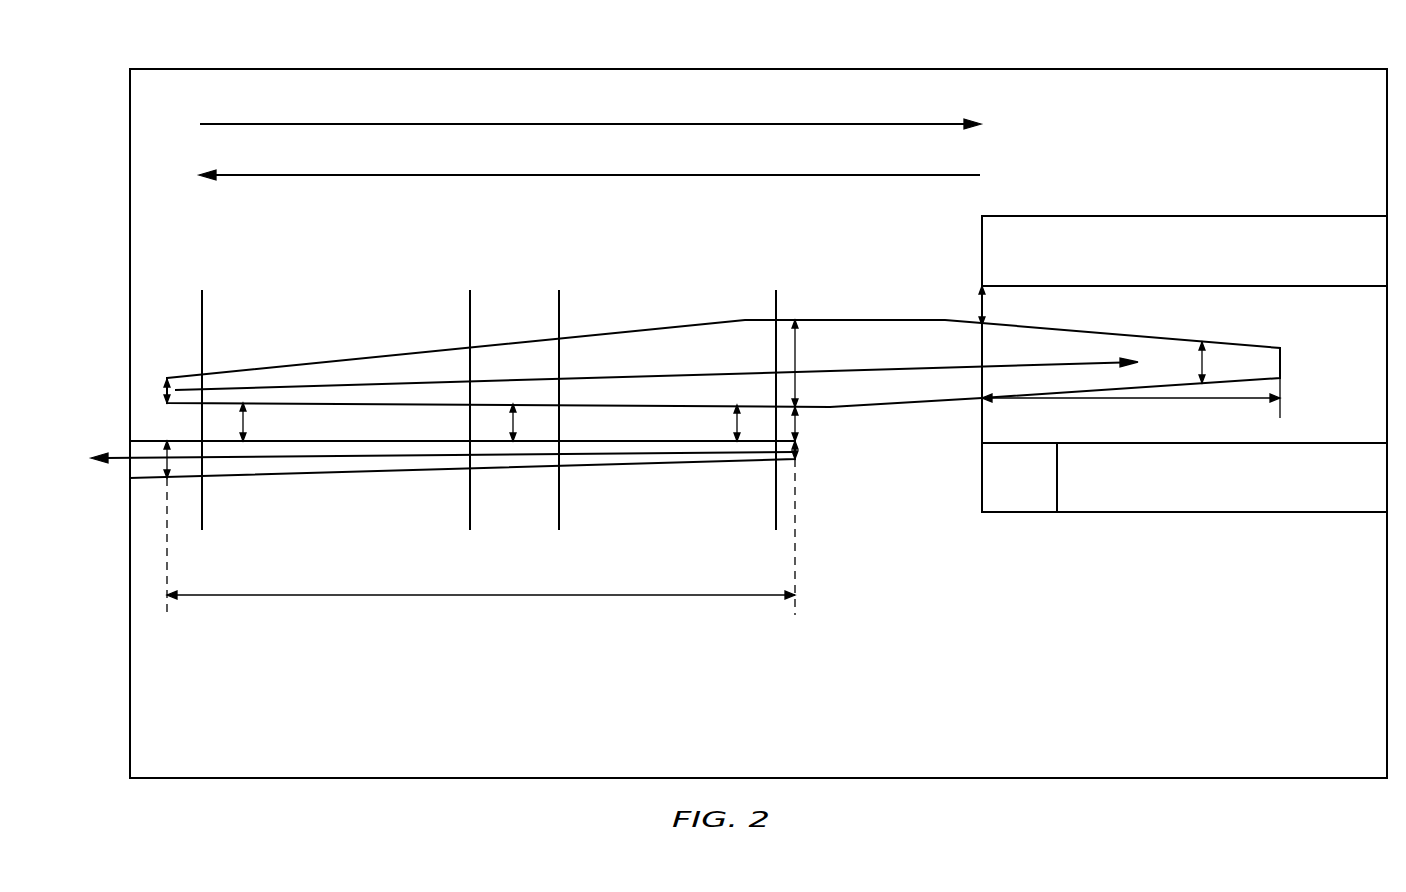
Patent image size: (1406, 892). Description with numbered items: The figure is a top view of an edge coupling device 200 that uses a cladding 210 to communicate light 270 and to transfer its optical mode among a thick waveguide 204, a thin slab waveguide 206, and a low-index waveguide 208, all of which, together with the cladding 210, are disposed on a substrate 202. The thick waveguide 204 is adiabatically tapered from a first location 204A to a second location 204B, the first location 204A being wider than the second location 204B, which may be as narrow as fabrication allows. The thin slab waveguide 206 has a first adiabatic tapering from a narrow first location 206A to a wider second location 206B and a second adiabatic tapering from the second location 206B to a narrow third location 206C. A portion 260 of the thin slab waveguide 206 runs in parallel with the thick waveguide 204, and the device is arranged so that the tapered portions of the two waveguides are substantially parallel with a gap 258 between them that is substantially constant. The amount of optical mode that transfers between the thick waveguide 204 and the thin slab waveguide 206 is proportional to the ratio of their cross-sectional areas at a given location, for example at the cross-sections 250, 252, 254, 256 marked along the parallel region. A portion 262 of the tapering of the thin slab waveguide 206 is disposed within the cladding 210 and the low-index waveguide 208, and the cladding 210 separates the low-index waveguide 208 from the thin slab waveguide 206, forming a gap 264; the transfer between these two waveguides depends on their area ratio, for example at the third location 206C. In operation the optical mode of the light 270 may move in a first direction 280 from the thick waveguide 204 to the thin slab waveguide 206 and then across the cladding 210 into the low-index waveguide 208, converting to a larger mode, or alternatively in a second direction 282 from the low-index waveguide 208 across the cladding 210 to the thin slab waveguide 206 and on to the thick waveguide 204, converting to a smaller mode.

The edge coupling device 200 is at (122, 30).
The substrate 202 is at (758, 423).
The thick waveguide 204 is at (372, 473).
The first location 204A is at (164, 450).
The second location 204B is at (799, 450).
The thin slab waveguide 206 is at (378, 358).
The first location 206A is at (165, 386).
The second location 206B is at (801, 340).
The third location 206C is at (1206, 362).
The low-index waveguide 208 is at (1185, 216).
The cladding 210 is at (761, 370).
The cross-section 250 is at (203, 297).
The cross-section 252 is at (470, 297).
The cross-section 254 is at (559, 297).
The cross-section 256 is at (776, 297).
The gap 258 is at (799, 425).
The portion 260 is at (485, 597).
The portion 262 is at (1135, 400).
The gap 264 is at (982, 300).
The light 270 is at (118, 460).
The first direction 280 is at (593, 124).
The second direction 282 is at (593, 175).